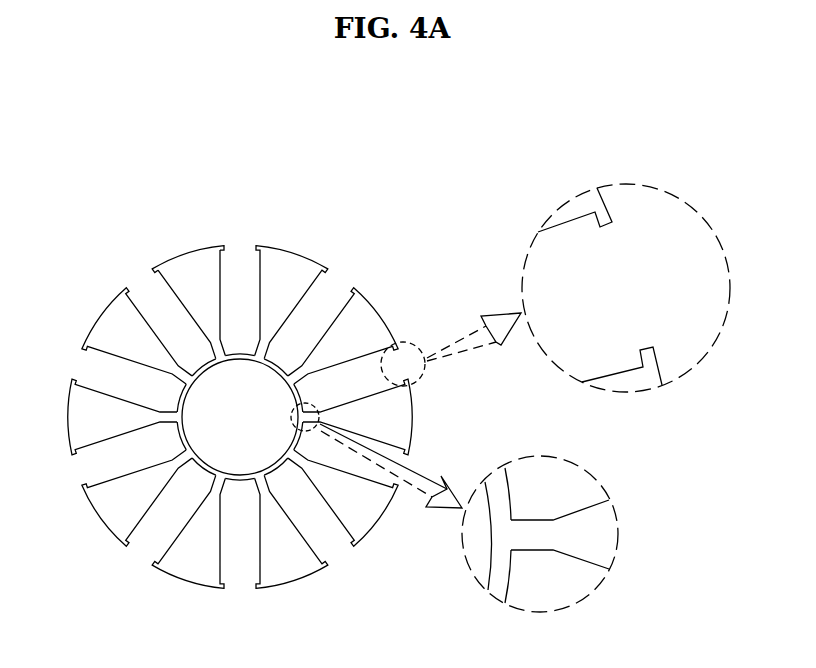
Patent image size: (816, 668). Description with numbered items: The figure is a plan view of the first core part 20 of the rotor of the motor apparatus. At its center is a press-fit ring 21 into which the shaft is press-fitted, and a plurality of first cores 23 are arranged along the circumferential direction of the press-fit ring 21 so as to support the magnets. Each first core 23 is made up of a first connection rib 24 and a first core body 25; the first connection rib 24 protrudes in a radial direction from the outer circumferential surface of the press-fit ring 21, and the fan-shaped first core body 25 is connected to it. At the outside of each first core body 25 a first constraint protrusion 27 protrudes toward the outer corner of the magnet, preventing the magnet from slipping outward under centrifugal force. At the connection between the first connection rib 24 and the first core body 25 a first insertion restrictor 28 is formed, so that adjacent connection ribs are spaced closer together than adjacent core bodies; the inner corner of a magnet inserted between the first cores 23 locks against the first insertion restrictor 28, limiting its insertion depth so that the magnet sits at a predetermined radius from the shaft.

The first core part 20 is at (240, 361).
The press-fit ring 21 is at (197, 358).
The first core 23 is at (222, 246).
The first connection rib 24 is at (233, 356).
The first core body 25 is at (189, 223).
The first constraint protrusion 27 is at (608, 222).
The first insertion restrictor 28 is at (553, 520).